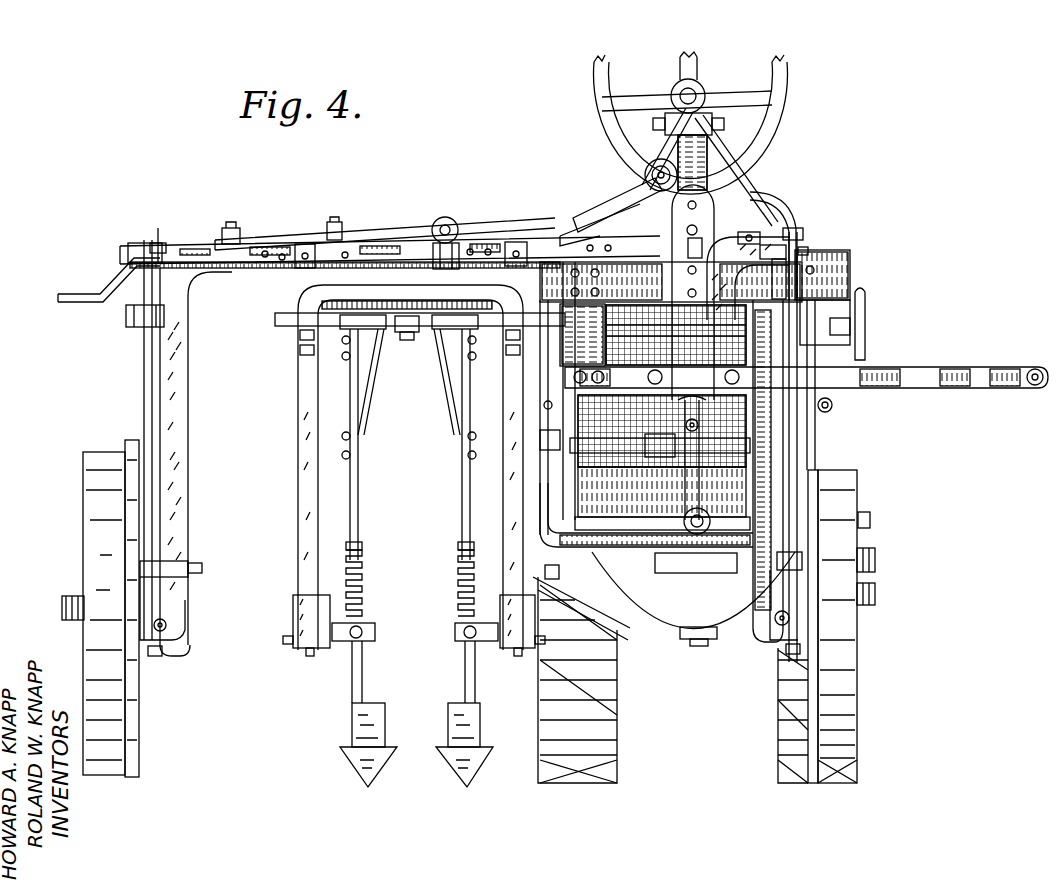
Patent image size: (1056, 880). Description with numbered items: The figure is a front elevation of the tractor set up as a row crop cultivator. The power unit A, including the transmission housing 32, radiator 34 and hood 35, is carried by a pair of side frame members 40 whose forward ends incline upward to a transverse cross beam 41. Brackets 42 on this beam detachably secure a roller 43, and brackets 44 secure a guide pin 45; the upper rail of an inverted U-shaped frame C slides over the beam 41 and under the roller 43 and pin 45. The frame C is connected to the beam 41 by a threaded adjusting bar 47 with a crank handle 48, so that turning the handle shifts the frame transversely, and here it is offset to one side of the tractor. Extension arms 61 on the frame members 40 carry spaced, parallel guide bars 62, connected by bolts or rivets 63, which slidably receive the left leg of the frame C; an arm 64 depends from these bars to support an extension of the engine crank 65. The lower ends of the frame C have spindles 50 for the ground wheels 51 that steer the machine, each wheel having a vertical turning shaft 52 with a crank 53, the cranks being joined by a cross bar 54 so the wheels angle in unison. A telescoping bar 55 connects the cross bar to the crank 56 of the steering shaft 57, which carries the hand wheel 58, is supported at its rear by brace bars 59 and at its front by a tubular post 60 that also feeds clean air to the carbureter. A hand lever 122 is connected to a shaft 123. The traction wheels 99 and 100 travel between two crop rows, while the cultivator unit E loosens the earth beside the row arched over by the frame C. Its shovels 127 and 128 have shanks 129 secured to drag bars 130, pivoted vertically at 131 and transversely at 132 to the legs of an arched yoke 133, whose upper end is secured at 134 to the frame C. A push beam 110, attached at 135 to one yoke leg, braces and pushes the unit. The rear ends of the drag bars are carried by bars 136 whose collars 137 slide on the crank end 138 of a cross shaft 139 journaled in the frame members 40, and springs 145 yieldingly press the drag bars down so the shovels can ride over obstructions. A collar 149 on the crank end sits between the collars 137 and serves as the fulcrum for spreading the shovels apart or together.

The transmission housing 32 is at (684, 608).
The radiator 34 is at (783, 254).
The hood 35 is at (708, 244).
The side frame members 40 is at (546, 436).
The transverse cross beam 41 is at (840, 276).
The brackets 42 is at (760, 232).
The roller 43 is at (715, 195).
The brackets 44 is at (453, 218).
The guide pin 45 is at (444, 224).
The threaded adjusting bar 47 is at (252, 268).
The handle 48 is at (74, 303).
The spindles 50 is at (160, 608).
The ground wheels 51 is at (140, 727).
The vertical turning shaft 52 is at (147, 382).
The cranks 53 is at (155, 252).
The cross bar 54 is at (792, 224).
The bar 55 is at (583, 216).
The crank 56 is at (644, 188).
The steering shaft 57 is at (664, 123).
The hand wheel 58 is at (607, 75).
The brace bars 59 is at (708, 122).
The tubular post 60 is at (707, 152).
The extension arms 61 is at (544, 404).
The guide bars 62 is at (945, 367).
The bolts or rivets 63 is at (1036, 368).
The arm 64 is at (680, 454).
The engine crank 65 is at (697, 489).
The tractor wheel 99 is at (788, 720).
The tractor wheel 100 is at (617, 752).
The push beam 110 is at (652, 610).
The hand lever 122 is at (864, 353).
The shaft 123 is at (870, 521).
The cultivator shovel 127 is at (466, 778).
The cultivator shovel 128 is at (370, 778).
The shanks 129 is at (366, 680).
The drag bars 130 is at (350, 634).
The vertical pivot 131 is at (309, 652).
The transverse pivot 132 is at (292, 639).
The arched yoke 133 is at (304, 512).
The detachable securing point 134 is at (302, 243).
The attachment point 135 is at (547, 581).
The bars 136 is at (461, 495).
The collars 137 is at (350, 332).
The crank end 138 is at (277, 315).
The cross shaft 139 is at (667, 318).
The springs 145 is at (462, 582).
The collar 149 is at (402, 333).
The power unit A is at (743, 634).
The inverted U-shaped frame C is at (194, 468).
The cultivator unit E is at (336, 685).